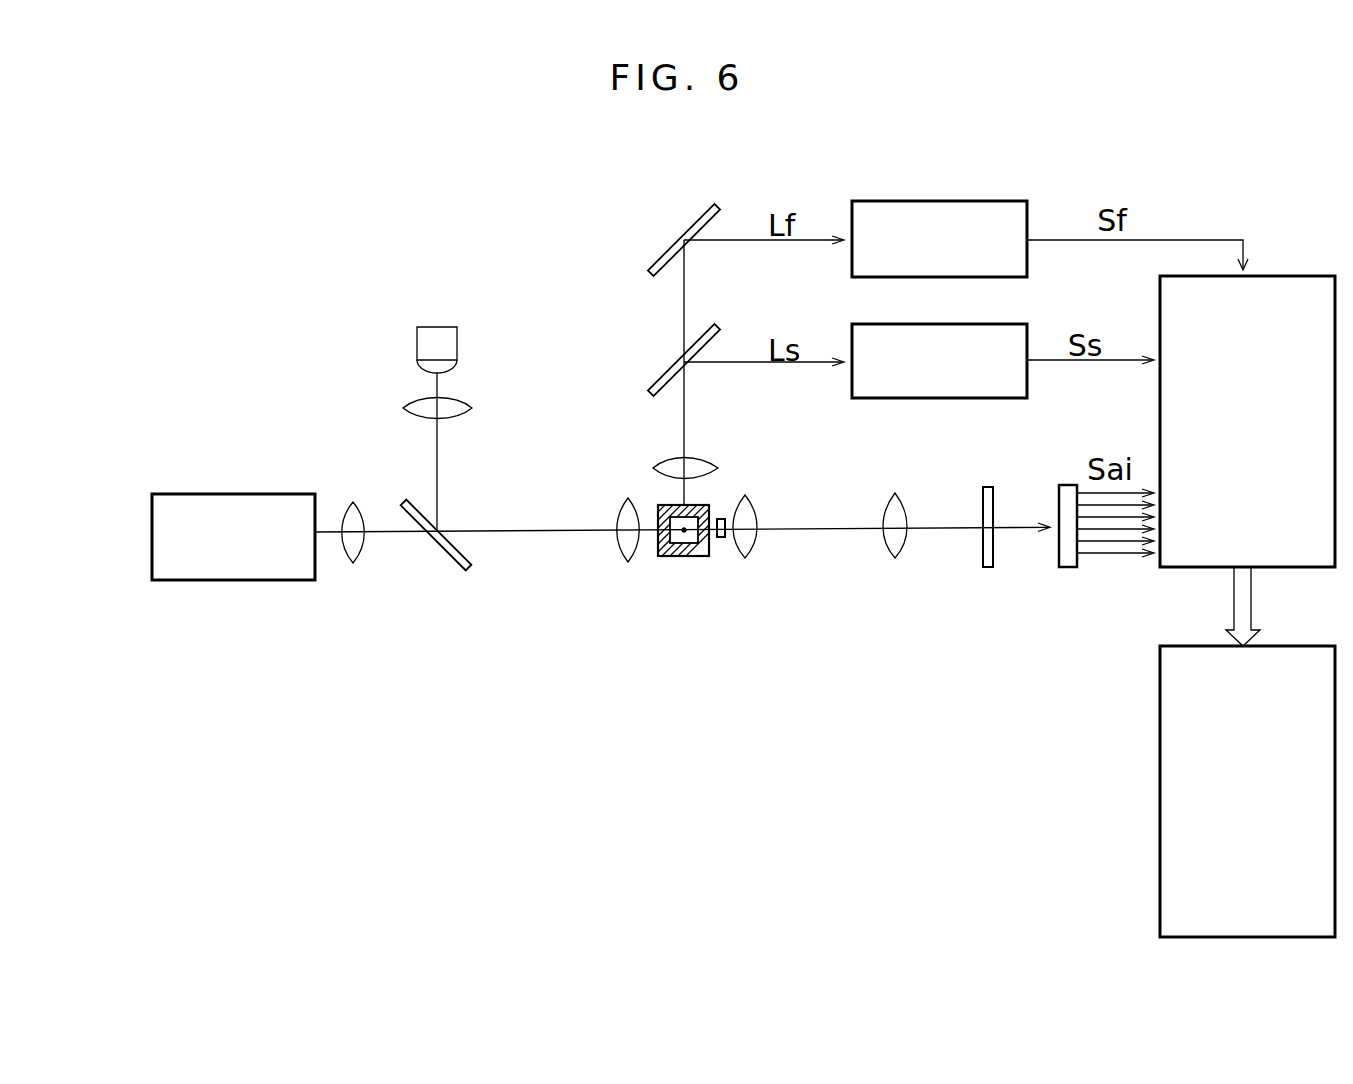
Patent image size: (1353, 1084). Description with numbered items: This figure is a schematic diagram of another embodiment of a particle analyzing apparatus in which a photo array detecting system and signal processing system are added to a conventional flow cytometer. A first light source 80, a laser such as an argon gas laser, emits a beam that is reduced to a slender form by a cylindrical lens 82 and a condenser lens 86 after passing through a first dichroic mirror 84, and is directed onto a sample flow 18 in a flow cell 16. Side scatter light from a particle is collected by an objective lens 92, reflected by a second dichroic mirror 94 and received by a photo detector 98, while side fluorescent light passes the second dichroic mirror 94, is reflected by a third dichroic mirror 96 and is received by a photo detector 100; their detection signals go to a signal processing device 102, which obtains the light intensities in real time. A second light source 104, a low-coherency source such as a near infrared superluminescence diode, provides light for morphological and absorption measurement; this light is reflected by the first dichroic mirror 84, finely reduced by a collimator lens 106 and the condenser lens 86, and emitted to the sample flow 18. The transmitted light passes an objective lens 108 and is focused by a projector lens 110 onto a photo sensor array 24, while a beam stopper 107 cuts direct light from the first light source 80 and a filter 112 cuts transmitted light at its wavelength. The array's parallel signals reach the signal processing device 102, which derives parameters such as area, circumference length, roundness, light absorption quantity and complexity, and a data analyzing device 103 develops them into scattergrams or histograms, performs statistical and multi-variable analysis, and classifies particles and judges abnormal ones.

The first light source 80 is at (225, 494).
The cylindrical lens 82 is at (346, 500).
The first dichroic mirror 84 is at (468, 560).
The condenser lens 86 is at (614, 517).
The flow cell 16 is at (663, 557).
The sample flow 18 is at (682, 528).
The objective lens 92 is at (707, 463).
The second dichroic mirror 94 is at (656, 380).
The third dichroic mirror 96 is at (689, 222).
The photo detector 98 is at (950, 323).
The photo detector 100 is at (945, 200).
The signal processing device 102 is at (1297, 275).
The data analyzing device 103 is at (1160, 848).
The second light source 104 is at (437, 327).
The collimator lens 106 is at (463, 400).
The beam stopper 107 is at (722, 538).
The objective lens 108 is at (753, 548).
The projector lens 110 is at (892, 557).
The filter 112 is at (982, 557).
The photo sensor array 24 is at (1058, 567).